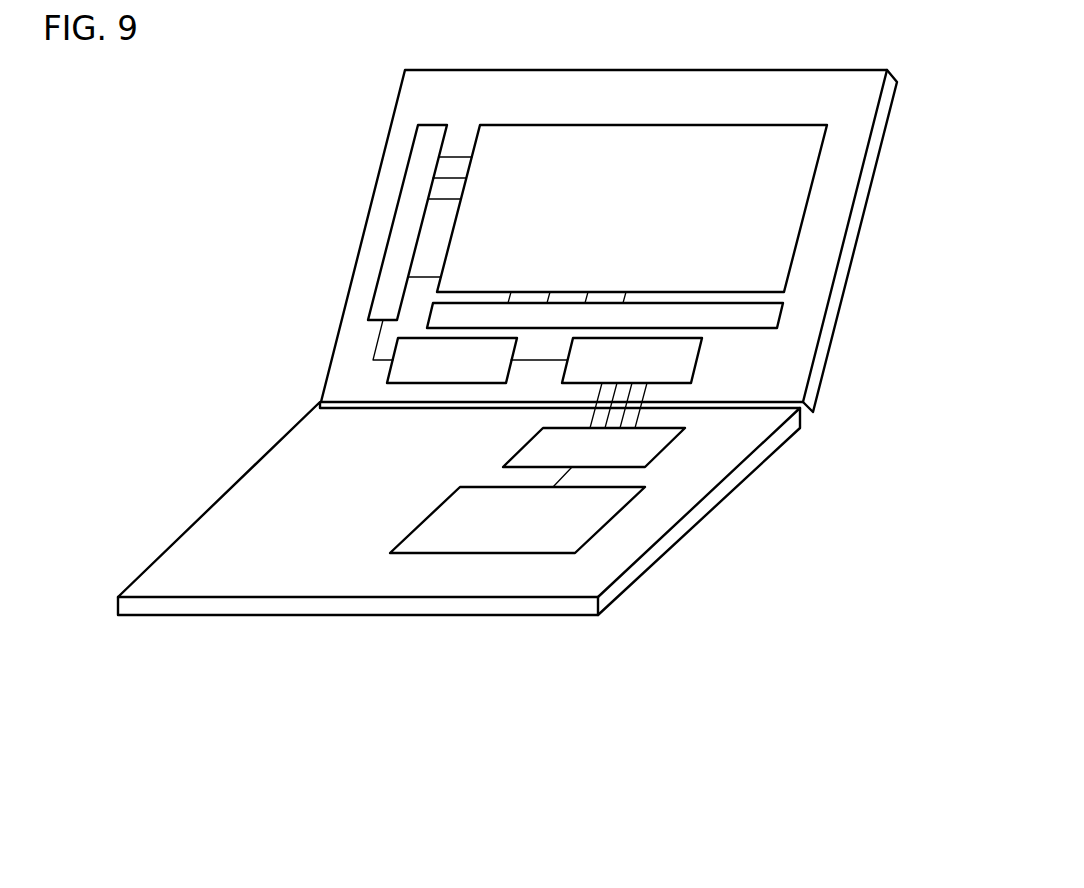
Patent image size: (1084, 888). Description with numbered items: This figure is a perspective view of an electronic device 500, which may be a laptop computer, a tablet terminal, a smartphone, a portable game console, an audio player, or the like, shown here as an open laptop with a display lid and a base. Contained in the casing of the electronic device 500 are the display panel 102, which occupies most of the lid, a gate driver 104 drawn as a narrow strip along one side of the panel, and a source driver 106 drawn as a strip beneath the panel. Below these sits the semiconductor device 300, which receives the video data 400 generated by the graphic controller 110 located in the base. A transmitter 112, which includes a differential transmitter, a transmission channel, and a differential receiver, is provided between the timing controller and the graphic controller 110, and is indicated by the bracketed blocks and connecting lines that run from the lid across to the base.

The electronic device 500 is at (572, 752).
The display panel 102 is at (768, 215).
The gate driver 104 is at (408, 227).
The source driver 106 is at (762, 315).
The semiconductor device 300 is at (422, 364).
The video data 400 is at (390, 366).
The transmitter 112 is at (627, 447).
The graphic controller 110 is at (510, 525).